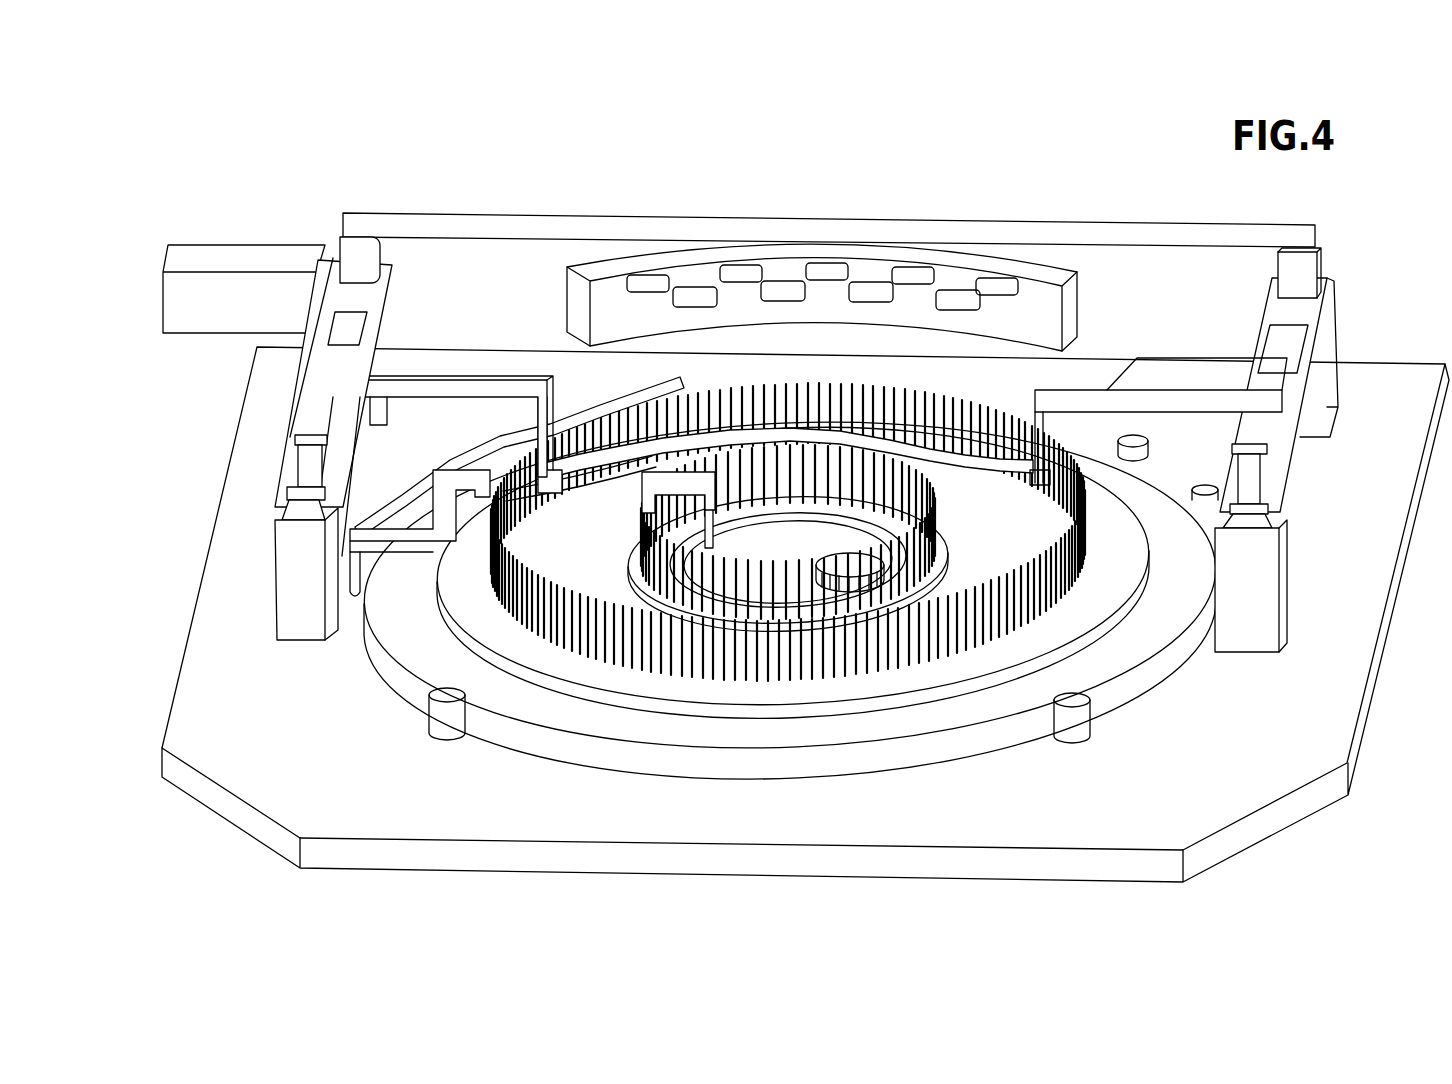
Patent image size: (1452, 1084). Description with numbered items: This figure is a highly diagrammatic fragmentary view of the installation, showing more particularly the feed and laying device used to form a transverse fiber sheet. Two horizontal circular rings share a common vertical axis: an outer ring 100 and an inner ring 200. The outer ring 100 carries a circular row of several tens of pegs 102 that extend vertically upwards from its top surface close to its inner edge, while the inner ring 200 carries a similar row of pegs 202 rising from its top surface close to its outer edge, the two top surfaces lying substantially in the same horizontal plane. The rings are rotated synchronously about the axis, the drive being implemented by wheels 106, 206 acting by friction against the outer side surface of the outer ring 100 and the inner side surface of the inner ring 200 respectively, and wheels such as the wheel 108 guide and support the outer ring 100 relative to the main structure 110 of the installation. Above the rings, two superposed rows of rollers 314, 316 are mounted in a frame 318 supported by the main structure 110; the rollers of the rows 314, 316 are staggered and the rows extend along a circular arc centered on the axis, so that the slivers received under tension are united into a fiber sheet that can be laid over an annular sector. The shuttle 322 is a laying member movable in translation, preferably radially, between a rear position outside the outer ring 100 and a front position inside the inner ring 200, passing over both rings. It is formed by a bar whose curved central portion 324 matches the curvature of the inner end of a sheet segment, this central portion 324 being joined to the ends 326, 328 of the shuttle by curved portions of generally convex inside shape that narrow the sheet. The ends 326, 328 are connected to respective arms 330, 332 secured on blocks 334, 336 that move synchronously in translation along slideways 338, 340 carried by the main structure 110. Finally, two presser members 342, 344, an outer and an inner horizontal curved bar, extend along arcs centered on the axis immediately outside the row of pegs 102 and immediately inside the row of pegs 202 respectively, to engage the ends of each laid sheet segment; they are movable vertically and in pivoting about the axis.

The outer ring 100 is at (1048, 638).
The pegs 102 is at (512, 603).
The wheel 106 is at (1215, 483).
The wheel 108 is at (440, 720).
The main structure 110 is at (252, 700).
The inner ring 200 is at (905, 527).
The pegs 202 is at (645, 550).
The wheel 206 is at (850, 562).
The row of rollers 314 is at (728, 272).
The row of rollers 316 is at (785, 290).
The frame 318 is at (1047, 267).
The shuttle 322 is at (937, 457).
The central portion 324 is at (817, 427).
The end of the shuttle 326 is at (1035, 483).
The end of the shuttle 328 is at (550, 472).
The arm 330 is at (1173, 397).
The arm 332 is at (483, 390).
The block 334 is at (1293, 347).
The block 336 is at (308, 423).
The slideway 338 is at (1327, 335).
The slideway 340 is at (346, 333).
The outer presser member 342 is at (730, 447).
The inner presser member 344 is at (652, 382).